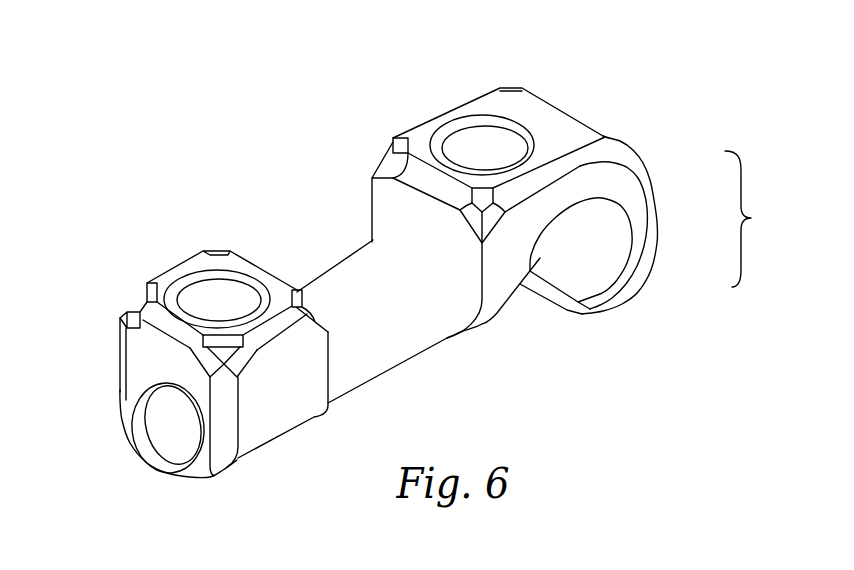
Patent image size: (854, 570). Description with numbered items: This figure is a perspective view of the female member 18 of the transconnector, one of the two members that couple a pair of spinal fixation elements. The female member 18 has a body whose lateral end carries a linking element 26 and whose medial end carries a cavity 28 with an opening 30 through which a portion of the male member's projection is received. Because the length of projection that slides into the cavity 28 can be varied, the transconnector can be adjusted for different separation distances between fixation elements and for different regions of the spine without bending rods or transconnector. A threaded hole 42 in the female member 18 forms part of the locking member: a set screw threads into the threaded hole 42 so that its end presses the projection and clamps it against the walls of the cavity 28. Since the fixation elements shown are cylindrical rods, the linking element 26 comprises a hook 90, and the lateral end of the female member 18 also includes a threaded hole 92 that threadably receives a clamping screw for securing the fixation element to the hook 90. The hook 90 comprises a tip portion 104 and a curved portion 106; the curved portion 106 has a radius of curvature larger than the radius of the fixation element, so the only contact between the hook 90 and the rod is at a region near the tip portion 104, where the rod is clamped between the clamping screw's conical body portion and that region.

The female member 18 is at (407, 277).
The linking element 26 is at (652, 157).
The cavity 28 is at (163, 403).
The opening 30 is at (180, 462).
The threaded hole 42 is at (202, 299).
The threaded hole 92 is at (483, 148).
The tip portion 104 is at (637, 302).
The curved portion 106 is at (648, 156).
The hook 90 is at (754, 219).